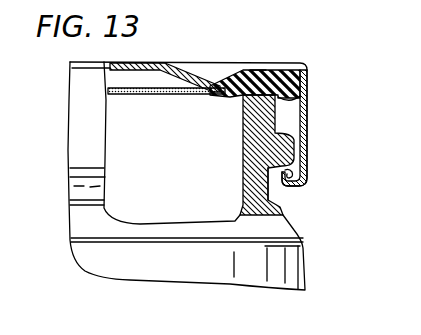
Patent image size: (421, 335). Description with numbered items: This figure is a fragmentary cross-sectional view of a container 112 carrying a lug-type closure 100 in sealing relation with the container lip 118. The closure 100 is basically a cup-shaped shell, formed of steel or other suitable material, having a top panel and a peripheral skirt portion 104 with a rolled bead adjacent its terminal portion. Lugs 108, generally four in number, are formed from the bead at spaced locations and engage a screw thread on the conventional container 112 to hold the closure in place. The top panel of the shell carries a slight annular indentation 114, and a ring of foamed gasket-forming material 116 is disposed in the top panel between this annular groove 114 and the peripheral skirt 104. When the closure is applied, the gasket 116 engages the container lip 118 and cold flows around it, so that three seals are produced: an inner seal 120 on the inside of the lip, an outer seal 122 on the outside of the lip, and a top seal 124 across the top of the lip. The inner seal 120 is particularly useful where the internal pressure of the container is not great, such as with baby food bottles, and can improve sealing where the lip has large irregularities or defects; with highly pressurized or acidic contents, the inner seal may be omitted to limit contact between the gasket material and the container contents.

The lug-type closure 100 is at (79, 133).
The peripheral skirt portion 104 is at (310, 135).
The lugs 108 is at (292, 177).
The container 112 is at (312, 267).
The annular indentation 114 is at (212, 82).
The ring of foamed gasket-forming material 116 is at (257, 70).
The container lip 118 is at (243, 124).
The inner seal 120 is at (237, 95).
The outer seal 122 is at (308, 117).
The top seal 124 is at (273, 73).